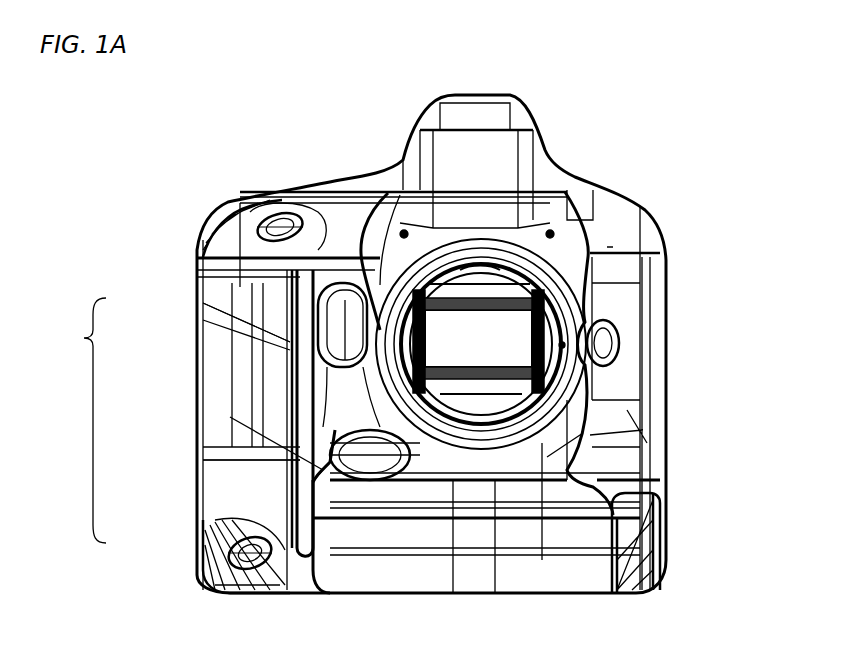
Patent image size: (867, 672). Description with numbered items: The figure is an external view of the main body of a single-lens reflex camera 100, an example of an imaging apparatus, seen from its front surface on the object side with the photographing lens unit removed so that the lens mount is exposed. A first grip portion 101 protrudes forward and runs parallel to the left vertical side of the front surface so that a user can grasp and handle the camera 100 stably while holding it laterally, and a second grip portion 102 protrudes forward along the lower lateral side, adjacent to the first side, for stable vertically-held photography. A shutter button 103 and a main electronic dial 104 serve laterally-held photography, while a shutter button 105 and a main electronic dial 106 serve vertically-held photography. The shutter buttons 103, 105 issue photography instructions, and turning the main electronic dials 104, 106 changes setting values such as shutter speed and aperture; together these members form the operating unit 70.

The camera 100 is at (633, 157).
The first grip portion 101 is at (330, 483).
The second grip portion 102 is at (477, 565).
The shutter button 103 is at (198, 297).
The main electronic dial 104 is at (199, 240).
The shutter button 105 is at (223, 522).
The main electronic dial 106 is at (200, 548).
The operating unit 70 is at (84, 338).